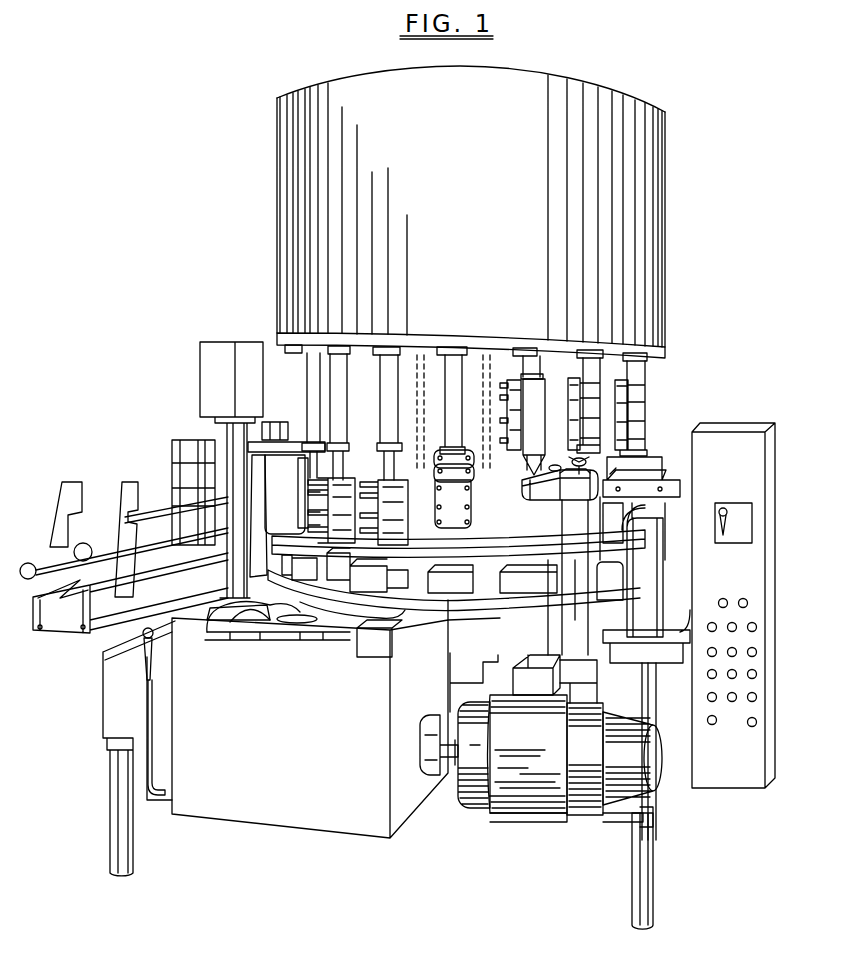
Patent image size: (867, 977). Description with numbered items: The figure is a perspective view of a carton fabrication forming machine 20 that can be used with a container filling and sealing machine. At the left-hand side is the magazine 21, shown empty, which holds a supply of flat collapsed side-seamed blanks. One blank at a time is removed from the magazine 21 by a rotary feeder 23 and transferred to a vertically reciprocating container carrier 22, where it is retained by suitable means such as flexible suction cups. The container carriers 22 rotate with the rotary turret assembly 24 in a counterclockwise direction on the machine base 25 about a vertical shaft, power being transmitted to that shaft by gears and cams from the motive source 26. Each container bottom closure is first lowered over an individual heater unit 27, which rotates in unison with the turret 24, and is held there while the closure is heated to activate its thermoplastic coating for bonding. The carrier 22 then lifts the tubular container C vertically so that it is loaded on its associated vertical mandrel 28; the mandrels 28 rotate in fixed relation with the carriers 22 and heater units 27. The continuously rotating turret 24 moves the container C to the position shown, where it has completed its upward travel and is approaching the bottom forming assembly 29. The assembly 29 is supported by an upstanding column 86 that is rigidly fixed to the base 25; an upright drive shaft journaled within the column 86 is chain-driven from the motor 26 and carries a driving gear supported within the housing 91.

The forming machine 20 is at (235, 339).
The magazine 21 is at (163, 502).
The container carrier 22 is at (476, 506).
The rotary feeder 23 is at (286, 413).
The rotary turret assembly 24 is at (679, 347).
The machine base 25 is at (124, 720).
The motive source 26 is at (530, 815).
The heater unit 27 is at (459, 582).
The vertical mandrel 28 is at (651, 421).
The bottom forming assembly 29 is at (606, 468).
The upstanding column 86 is at (566, 528).
The housing 91 is at (560, 496).
The tubular container C is at (552, 392).